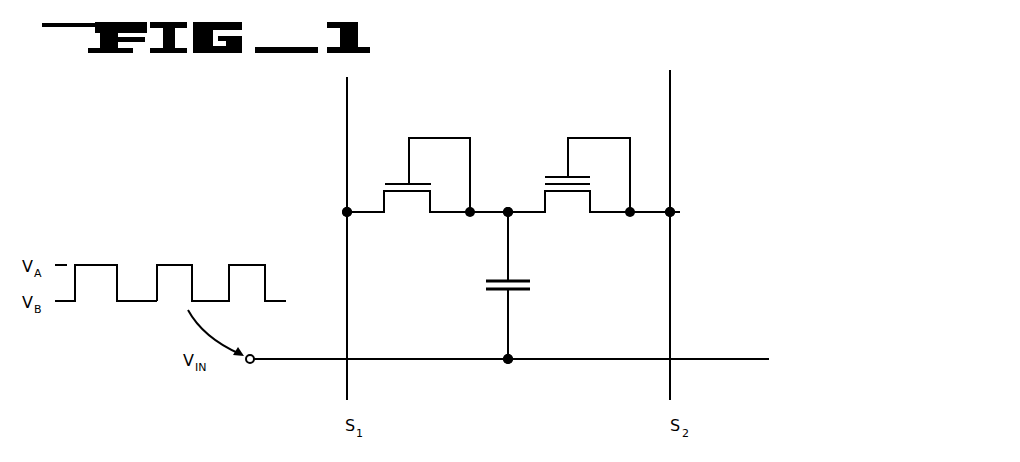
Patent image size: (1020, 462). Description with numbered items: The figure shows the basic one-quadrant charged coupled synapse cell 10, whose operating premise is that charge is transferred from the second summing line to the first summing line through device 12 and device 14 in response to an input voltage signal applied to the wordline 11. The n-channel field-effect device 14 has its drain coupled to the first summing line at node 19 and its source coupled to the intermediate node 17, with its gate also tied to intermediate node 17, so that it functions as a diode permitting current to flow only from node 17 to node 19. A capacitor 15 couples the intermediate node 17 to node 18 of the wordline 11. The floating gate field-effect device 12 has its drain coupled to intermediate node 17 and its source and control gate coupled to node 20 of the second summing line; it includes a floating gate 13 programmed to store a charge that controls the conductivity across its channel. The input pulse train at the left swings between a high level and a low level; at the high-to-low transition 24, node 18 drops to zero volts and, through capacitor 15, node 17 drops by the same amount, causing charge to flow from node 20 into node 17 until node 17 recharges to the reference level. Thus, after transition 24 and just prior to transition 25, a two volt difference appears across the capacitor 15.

The one-quadrant charged coupled synapse cell 10 is at (561, 67).
The wordline 11 is at (707, 358).
The floating gate field-effect device 12 is at (562, 203).
The floating gate 13 is at (542, 183).
The n-channel field-effect device 14 is at (408, 200).
The capacitor 15 is at (537, 285).
The intermediate node 17 is at (512, 216).
The node of wordline 18 is at (509, 365).
The node on summing line S1 19 is at (341, 212).
The node on summing line S2 20 is at (676, 210).
The high-to-low transition 24 is at (118, 271).
The transition 25 is at (158, 281).